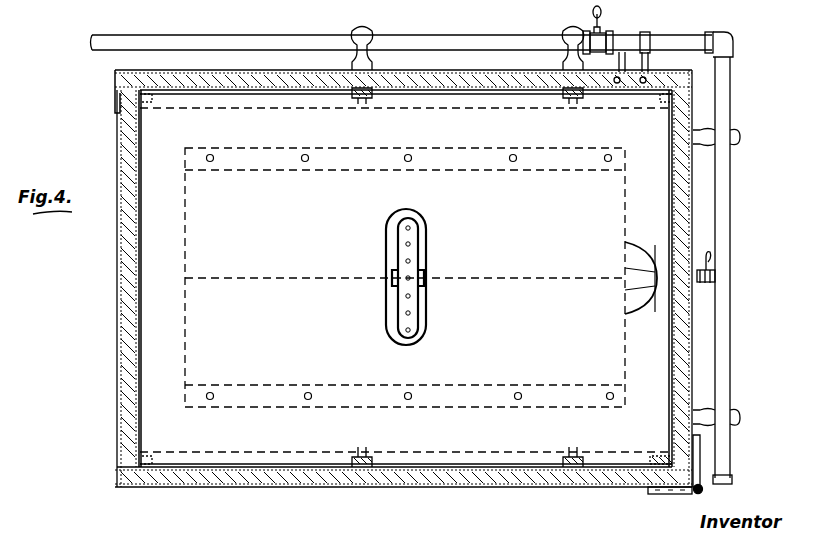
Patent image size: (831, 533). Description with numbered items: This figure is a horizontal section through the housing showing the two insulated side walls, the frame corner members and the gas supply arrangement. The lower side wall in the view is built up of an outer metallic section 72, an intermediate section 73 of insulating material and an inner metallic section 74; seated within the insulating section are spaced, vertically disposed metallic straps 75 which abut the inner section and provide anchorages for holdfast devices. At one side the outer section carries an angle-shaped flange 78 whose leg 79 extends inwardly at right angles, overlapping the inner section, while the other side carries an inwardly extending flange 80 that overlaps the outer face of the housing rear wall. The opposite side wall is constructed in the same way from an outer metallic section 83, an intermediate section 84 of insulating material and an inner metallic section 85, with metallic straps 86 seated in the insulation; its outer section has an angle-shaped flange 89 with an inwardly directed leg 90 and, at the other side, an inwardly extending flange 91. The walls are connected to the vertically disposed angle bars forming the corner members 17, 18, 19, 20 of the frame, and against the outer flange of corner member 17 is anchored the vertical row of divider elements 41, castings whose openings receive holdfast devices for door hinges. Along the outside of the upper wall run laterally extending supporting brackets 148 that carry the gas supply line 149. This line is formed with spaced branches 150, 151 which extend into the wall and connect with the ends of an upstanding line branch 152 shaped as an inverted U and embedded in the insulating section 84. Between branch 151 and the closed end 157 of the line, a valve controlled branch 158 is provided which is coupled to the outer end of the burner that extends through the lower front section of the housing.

The gas supply line 149 is at (215, 43).
The metallic straps 86 is at (355, 80).
The outer metallic section 83 is at (440, 70).
The intermediate section of insulating material 84 is at (496, 80).
The inner metallic section 85 is at (492, 95).
The branch 150 is at (618, 50).
The branch 151 is at (646, 60).
The upstanding line branch 152 is at (612, 84).
The angle-shaped flange 89 is at (697, 80).
The leg 90 is at (690, 90).
The supporting brackets 148 is at (738, 140).
The valve controlled branch 158 is at (712, 278).
The closed end 157 is at (732, 484).
The inwardly extending flange 91 is at (114, 84).
The angle bar corner member 20 is at (147, 96).
The angle bar corner member 19 is at (664, 98).
The angle bar corner member 18 is at (150, 458).
The angle bar corner member 17 is at (660, 457).
The inwardly extending flange 80 is at (117, 470).
The inner metallic section 74 is at (247, 476).
The outer metallic section 72 is at (326, 476).
The intermediate section of insulating material 73 is at (456, 476).
The metallic straps 75 is at (370, 478).
The divider elements 41 is at (655, 490).
The leg 79 is at (700, 462).
The angle-shaped flange 78 is at (700, 474).